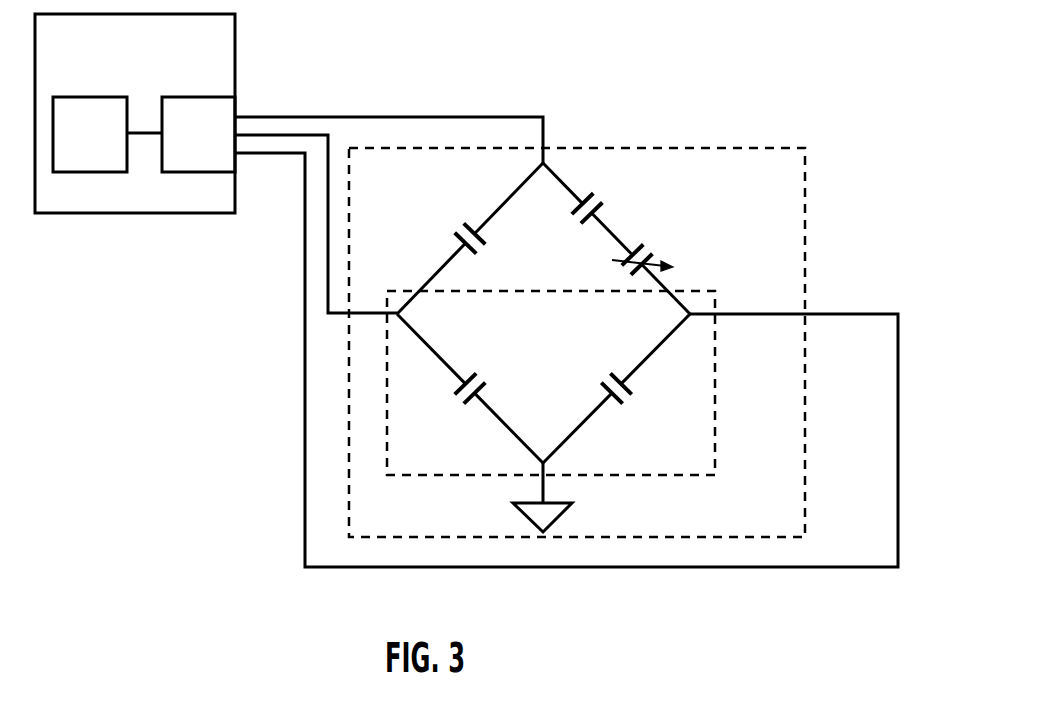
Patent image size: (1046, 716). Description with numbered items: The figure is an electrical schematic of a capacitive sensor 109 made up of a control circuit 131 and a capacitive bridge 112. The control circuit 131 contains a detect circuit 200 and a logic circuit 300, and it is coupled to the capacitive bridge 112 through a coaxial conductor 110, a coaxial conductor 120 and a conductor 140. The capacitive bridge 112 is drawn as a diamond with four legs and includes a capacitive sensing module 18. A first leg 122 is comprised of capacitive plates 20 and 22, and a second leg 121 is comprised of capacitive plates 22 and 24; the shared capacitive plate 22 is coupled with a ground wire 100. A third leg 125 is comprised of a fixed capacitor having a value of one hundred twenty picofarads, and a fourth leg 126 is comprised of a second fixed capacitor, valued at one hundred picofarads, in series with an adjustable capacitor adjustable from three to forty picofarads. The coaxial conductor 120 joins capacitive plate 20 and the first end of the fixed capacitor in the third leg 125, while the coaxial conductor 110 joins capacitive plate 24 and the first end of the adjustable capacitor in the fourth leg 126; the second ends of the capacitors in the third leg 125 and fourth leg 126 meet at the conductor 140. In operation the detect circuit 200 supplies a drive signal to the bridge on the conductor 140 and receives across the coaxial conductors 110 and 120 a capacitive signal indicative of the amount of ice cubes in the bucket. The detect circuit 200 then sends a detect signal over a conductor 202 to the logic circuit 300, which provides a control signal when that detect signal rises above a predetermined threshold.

The control circuit 131 is at (235, 48).
The logic circuit 300 is at (78, 97).
The detect circuit 200 is at (193, 97).
The conductor 202 is at (148, 133).
The conductor 140 is at (478, 118).
The coaxial conductor 120 is at (362, 310).
The coaxial conductor 110 is at (755, 313).
The capacitive sensor 109 is at (645, 102).
The capacitive bridge 112 is at (750, 148).
The capacitive sensing module 18 is at (715, 392).
The third leg 125 is at (502, 210).
The fourth leg 126 is at (614, 230).
The capacitive plate 20 is at (472, 373).
The capacitive plate 22 is at (468, 404).
The capacitive plate 24 is at (630, 382).
The first leg 122 is at (495, 410).
The second leg 121 is at (585, 420).
The ground wire 100 is at (543, 493).